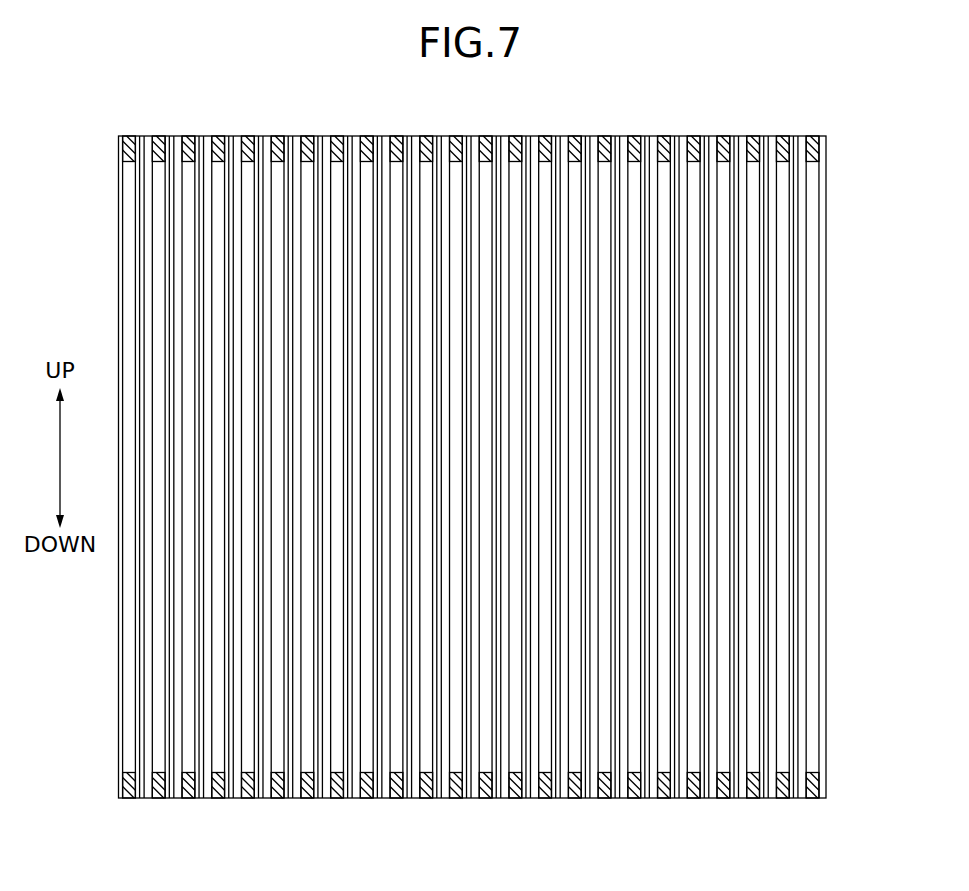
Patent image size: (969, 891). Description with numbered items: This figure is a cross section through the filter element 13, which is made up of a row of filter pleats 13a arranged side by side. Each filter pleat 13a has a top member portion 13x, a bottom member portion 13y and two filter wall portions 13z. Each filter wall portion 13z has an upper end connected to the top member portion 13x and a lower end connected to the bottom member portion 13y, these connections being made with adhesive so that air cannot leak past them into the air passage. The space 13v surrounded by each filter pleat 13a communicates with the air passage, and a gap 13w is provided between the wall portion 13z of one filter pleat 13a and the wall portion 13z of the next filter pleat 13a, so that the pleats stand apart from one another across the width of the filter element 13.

The filter element 13 is at (833, 392).
The filter pleat 13a is at (220, 136).
The top member portion 13x is at (785, 136).
The bottom member portion 13y is at (782, 798).
The filter wall portion 13z is at (802, 283).
The gap 13w is at (768, 485).
The space 13v is at (722, 575).